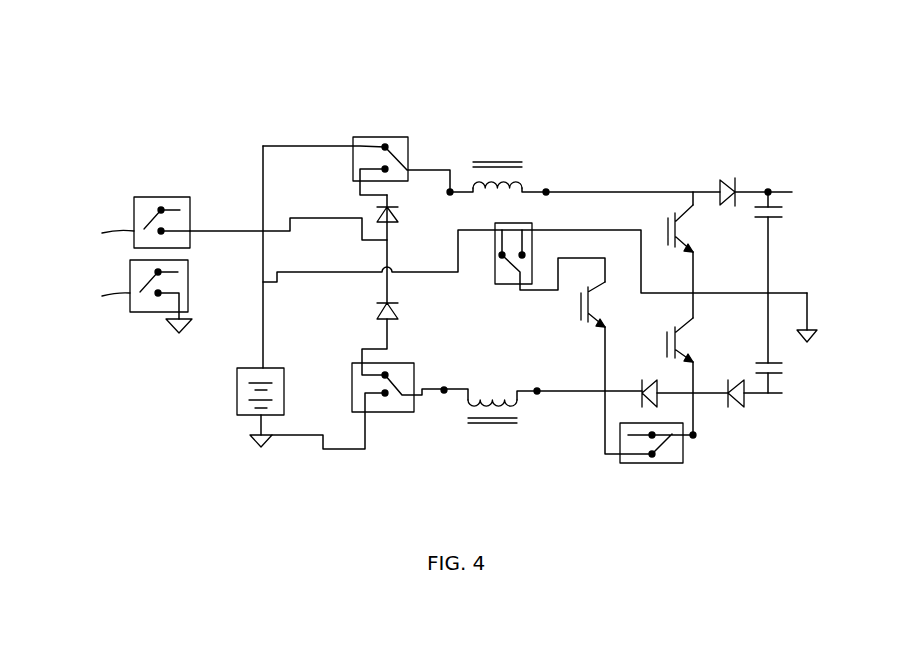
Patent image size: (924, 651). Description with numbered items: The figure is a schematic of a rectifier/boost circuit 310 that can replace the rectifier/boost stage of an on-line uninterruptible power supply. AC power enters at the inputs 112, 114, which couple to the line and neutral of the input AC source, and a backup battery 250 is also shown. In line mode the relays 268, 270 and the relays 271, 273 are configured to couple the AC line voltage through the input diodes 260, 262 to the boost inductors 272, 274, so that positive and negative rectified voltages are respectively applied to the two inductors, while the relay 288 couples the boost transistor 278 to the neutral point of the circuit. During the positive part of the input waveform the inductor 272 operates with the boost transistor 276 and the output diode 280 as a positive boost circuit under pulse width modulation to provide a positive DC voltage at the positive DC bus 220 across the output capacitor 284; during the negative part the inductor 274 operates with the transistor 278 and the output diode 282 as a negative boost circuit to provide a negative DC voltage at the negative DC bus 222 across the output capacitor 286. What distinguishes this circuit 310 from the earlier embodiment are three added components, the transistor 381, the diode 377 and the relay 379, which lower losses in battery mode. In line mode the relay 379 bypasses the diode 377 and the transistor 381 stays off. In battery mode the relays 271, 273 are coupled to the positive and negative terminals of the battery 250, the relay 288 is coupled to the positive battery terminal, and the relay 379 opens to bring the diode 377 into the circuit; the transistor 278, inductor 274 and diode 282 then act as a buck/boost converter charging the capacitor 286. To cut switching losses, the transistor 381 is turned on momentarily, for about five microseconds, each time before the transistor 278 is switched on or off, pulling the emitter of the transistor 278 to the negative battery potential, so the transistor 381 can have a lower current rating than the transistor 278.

The input 112 is at (95, 232).
The input 114 is at (93, 295).
The positive DC bus 220 is at (768, 192).
The negative DC bus 222 is at (787, 396).
The backup battery 250 is at (237, 393).
The input diode 260 is at (398, 213).
The input diode 262 is at (400, 310).
The relay 268 is at (147, 197).
The relay 270 is at (145, 312).
The relay 271 is at (368, 137).
The inductor 272 is at (488, 160).
The relay 273 is at (382, 412).
The inductor 274 is at (503, 427).
The boost transistor 276 is at (678, 233).
The boost transistor 278 is at (592, 300).
The output diode 280 is at (728, 178).
The output diode 282 is at (733, 408).
The output capacitor 284 is at (788, 215).
The output capacitor 286 is at (795, 372).
The relay 288 is at (503, 284).
The rectifier/boost circuit 310 is at (668, 88).
The diode 377 is at (650, 380).
The relay 379 is at (647, 463).
The transistor 381 is at (680, 340).